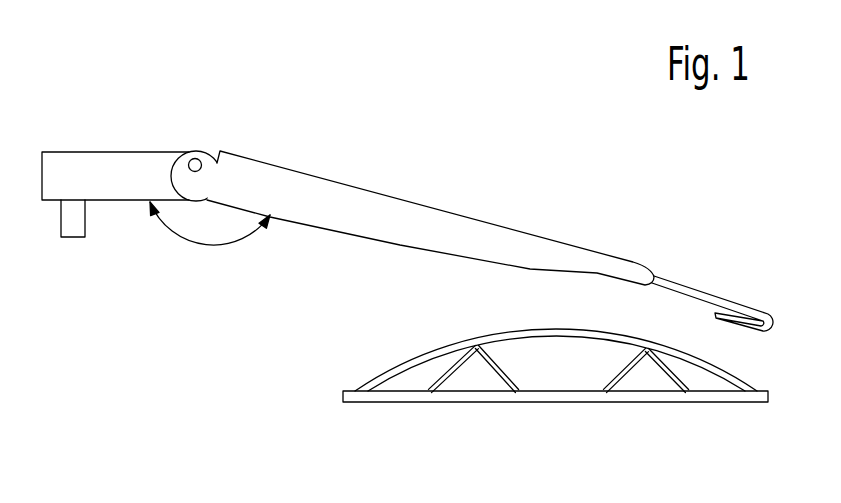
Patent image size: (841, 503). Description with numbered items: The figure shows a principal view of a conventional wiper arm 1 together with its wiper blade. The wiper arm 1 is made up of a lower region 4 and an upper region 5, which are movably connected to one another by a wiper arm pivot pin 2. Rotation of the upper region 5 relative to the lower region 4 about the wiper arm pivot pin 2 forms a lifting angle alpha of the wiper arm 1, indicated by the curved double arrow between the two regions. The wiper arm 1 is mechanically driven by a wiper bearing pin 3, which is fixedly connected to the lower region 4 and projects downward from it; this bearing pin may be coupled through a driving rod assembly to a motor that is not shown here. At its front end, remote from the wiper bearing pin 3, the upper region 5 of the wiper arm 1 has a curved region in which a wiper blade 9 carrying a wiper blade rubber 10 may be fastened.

The wiper arm 1 is at (276, 115).
The wiper arm pivot pin 2 is at (195, 158).
The wiper bearing pin 3 is at (72, 240).
The lower region 4 is at (93, 150).
The upper region 5 is at (445, 210).
The lifting angle alpha is at (195, 226).
The wiper blade 9 is at (592, 382).
The wiper blade rubber 10 is at (443, 402).